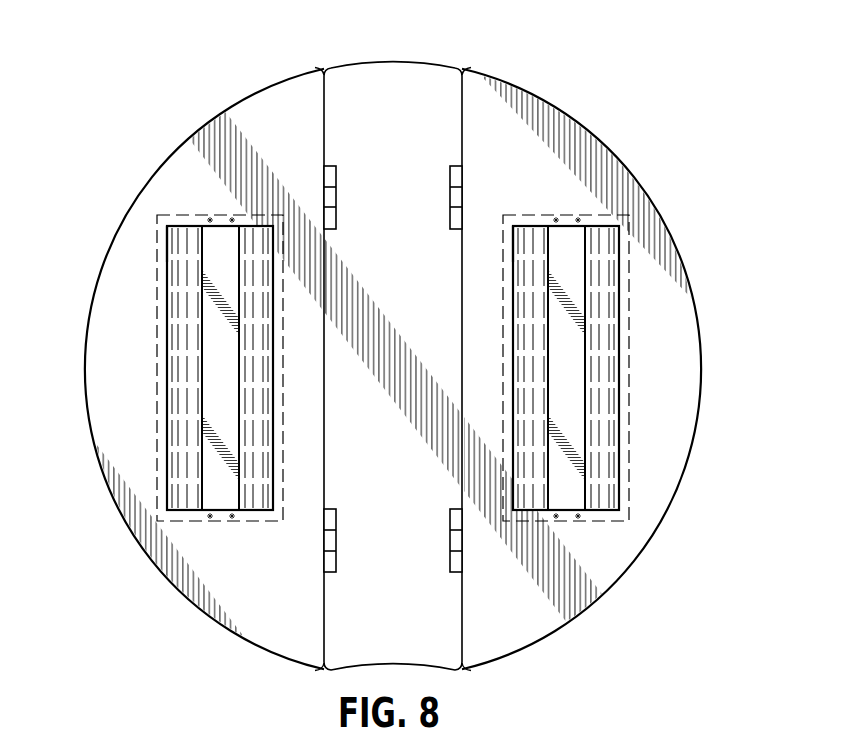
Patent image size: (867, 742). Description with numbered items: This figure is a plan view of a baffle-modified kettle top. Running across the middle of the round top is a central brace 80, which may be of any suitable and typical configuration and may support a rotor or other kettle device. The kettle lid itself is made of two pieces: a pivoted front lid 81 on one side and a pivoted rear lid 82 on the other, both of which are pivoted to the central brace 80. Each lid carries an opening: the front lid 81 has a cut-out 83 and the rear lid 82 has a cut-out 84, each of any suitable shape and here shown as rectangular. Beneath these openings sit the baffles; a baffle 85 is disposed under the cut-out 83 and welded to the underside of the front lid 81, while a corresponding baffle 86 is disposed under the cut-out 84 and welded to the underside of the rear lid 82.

The central brace 80 is at (392, 55).
The pivoted front lid 81 is at (244, 95).
The pivoted rear lid 82 is at (562, 105).
The cut-out 83 is at (169, 245).
The cut-out 84 is at (514, 243).
The baffle 85 is at (218, 352).
The baffle 86 is at (568, 352).